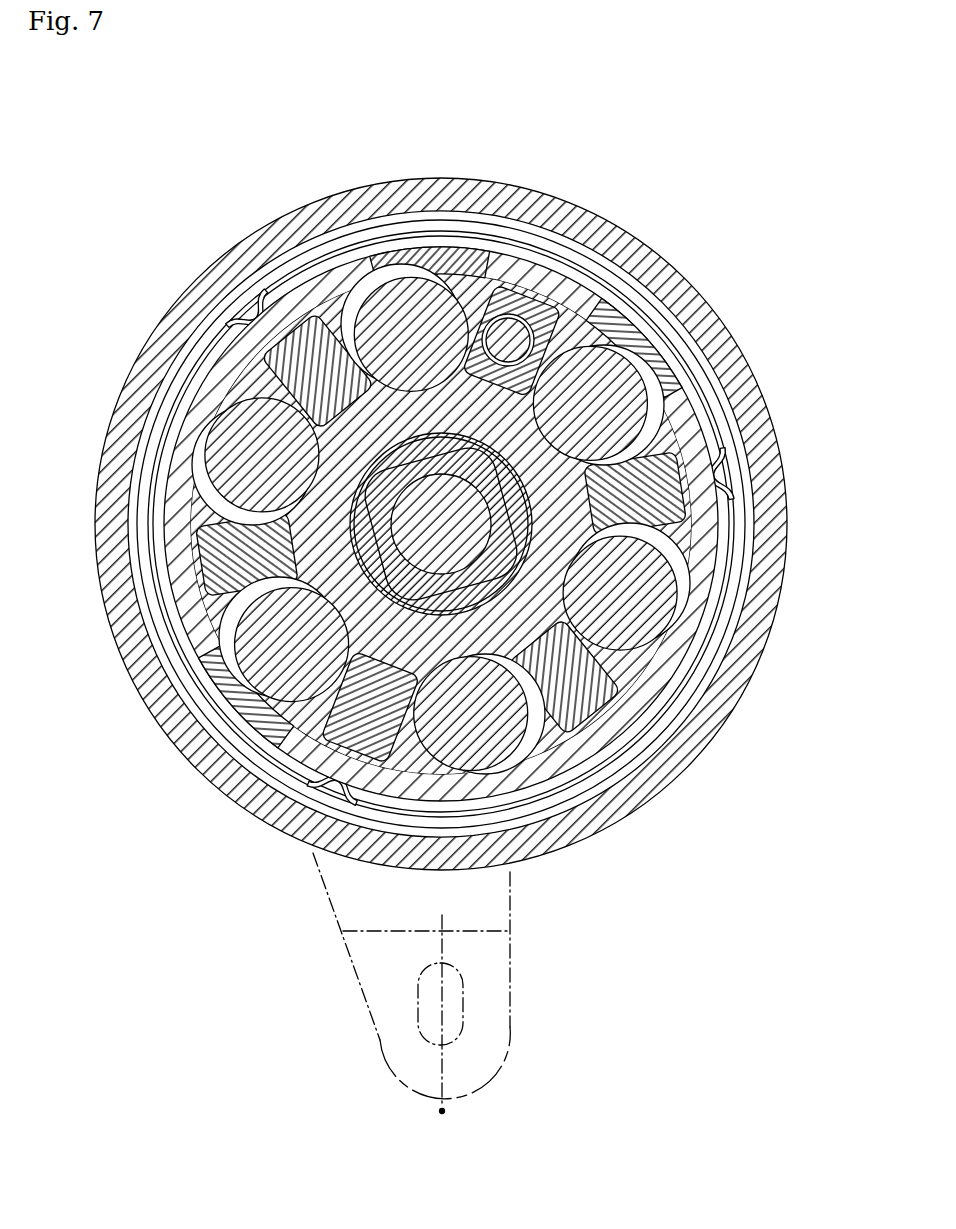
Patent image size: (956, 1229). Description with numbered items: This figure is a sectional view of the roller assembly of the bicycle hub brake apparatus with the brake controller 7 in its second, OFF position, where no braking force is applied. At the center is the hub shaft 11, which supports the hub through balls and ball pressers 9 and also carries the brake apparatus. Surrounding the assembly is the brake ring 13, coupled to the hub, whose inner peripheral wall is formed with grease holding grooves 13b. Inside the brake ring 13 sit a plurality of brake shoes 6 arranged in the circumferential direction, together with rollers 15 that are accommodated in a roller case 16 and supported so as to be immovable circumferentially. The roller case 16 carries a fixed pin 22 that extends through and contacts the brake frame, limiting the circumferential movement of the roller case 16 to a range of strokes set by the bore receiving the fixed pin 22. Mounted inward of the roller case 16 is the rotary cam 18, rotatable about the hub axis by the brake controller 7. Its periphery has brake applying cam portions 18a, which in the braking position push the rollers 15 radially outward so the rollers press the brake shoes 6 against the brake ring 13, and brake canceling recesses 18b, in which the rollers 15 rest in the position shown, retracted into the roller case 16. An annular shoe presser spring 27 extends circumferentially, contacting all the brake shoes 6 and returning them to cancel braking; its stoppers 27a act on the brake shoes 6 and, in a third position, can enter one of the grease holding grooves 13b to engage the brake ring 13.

The brake shoes 6 is at (567, 757).
The brake controller 7 is at (512, 952).
The ball pressers 9 is at (370, 503).
The hub shaft 11 is at (433, 553).
The brake ring 13 is at (185, 300).
The grease holding grooves 13b is at (697, 343).
The rollers 15 is at (418, 297).
The roller case 16 is at (215, 520).
The rotary cam 18 is at (600, 296).
The brake applying cam portions 18a is at (322, 318).
The brake canceling recesses 18b is at (415, 268).
The fixed pin 22 is at (522, 322).
The shoe presser spring 27 is at (493, 236).
The stoppers 27a is at (258, 295).